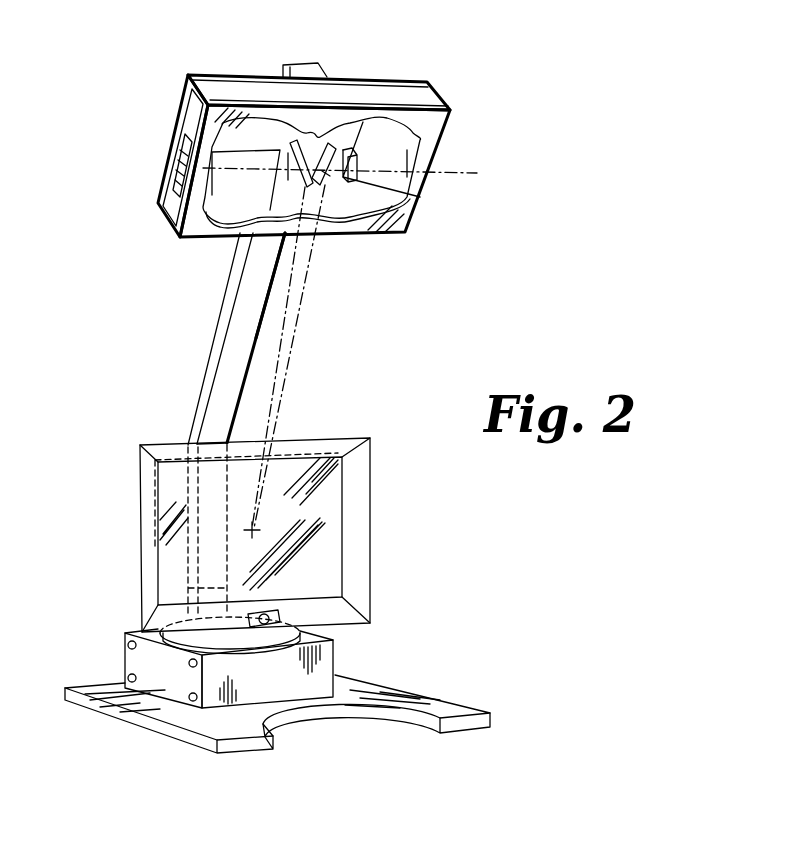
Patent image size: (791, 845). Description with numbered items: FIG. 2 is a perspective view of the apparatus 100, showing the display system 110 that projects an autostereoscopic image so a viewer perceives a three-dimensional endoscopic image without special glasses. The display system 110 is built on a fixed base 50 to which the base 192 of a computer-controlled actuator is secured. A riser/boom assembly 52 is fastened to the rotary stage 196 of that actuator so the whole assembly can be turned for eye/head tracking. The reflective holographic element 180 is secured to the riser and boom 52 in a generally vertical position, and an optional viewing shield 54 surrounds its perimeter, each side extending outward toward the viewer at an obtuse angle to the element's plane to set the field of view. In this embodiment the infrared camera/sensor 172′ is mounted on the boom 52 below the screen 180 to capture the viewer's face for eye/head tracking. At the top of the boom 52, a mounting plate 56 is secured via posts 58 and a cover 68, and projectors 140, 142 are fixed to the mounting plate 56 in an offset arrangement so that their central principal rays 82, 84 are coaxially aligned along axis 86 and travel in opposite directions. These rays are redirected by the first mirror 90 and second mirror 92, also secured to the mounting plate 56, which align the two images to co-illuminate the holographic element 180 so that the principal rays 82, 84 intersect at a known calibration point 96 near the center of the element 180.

The apparatus 100 is at (430, 62).
The posts 58 is at (435, 97).
The cover 68 is at (190, 112).
The second projector 142 is at (195, 135).
The mounting plate 56 is at (405, 213).
The first projector 140 is at (398, 143).
The second mirror 92 is at (302, 142).
The first mirror 90 is at (322, 148).
The axis 86 is at (477, 173).
The central principal ray 82 is at (293, 345).
The central principal ray 84 is at (280, 295).
The display system 110 is at (208, 348).
The riser/boom assembly 52 is at (192, 433).
The viewing shield 54 is at (143, 545).
The reflective holographic element 180 is at (250, 531).
The calibration point 96 is at (255, 527).
The infrared camera/sensor 172′ is at (282, 617).
The rotary stage 196 is at (300, 630).
The base of actuator 192 is at (268, 677).
The fixed base 50 is at (448, 708).